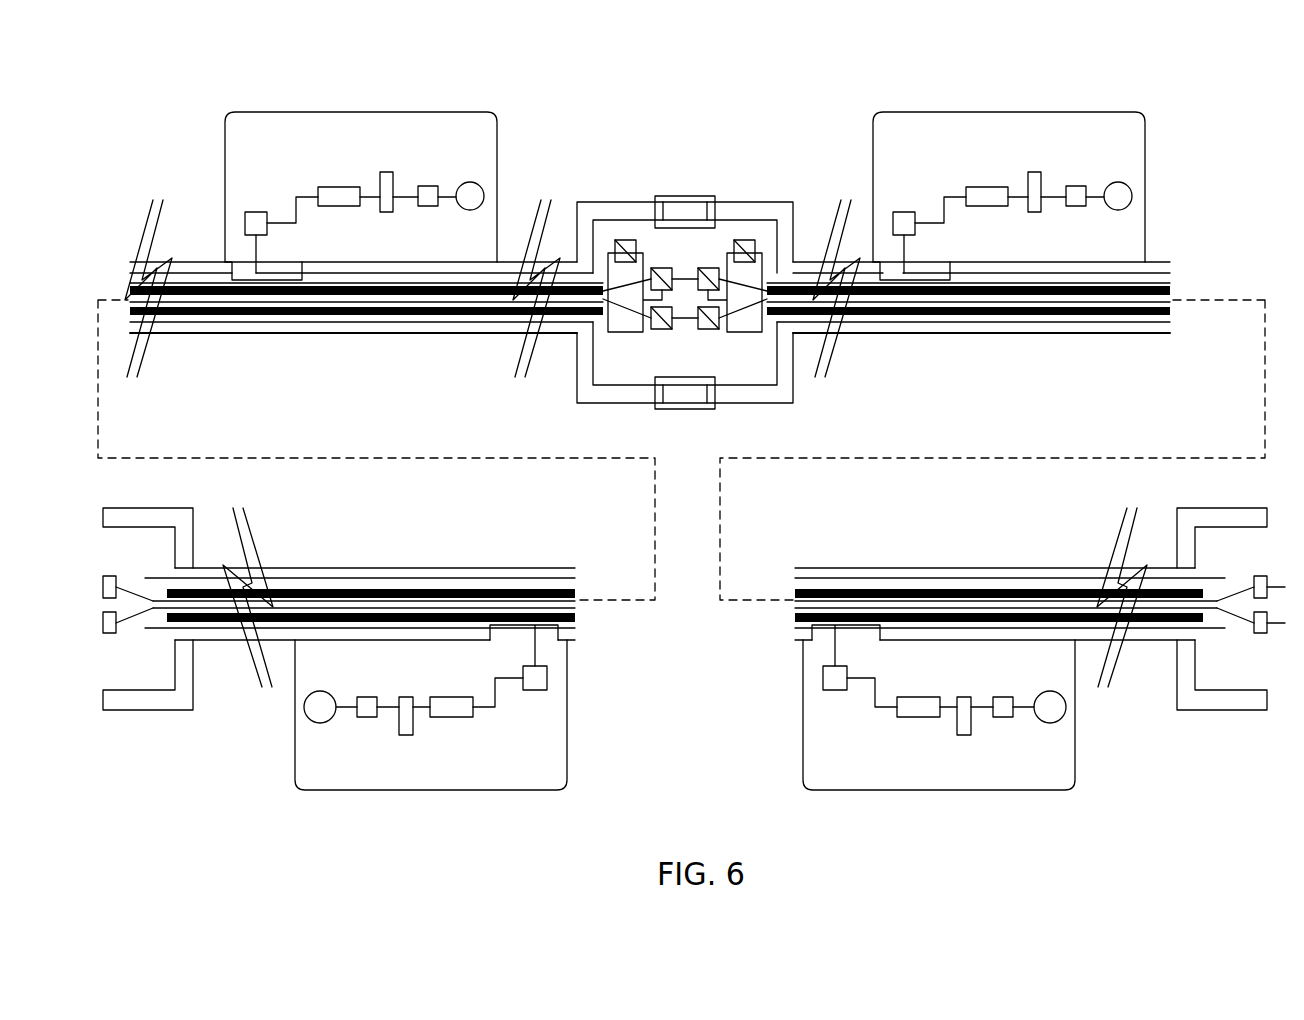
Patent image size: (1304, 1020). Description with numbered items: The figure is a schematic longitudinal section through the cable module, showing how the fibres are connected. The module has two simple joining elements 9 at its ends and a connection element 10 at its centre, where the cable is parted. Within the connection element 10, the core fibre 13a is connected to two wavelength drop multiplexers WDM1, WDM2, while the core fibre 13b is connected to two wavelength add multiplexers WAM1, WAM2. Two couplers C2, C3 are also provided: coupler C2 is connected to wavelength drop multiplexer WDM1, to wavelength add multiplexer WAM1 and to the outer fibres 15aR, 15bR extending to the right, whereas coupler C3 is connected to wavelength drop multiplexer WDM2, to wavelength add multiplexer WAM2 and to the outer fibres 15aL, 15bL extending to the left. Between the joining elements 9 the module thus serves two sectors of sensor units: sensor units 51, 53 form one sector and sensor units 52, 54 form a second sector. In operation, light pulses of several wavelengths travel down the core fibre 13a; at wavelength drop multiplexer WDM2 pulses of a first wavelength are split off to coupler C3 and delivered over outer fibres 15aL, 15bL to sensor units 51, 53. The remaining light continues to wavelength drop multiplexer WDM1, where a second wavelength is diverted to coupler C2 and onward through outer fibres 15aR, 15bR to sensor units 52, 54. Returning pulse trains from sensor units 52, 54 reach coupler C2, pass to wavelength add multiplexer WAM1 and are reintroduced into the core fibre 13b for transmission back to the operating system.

The connection element 10 is at (729, 203).
The sensor unit 51 is at (422, 112).
The sensor unit 52 is at (1026, 112).
The sensor unit 53 is at (568, 733).
The sensor unit 54 is at (1083, 713).
The outer fibre 15aL is at (472, 273).
The outer fibre 15bL is at (365, 322).
The outer fibre 15aR is at (805, 262).
The outer fibre 15bR is at (858, 322).
The wavelength drop multiplexer WDM1 is at (706, 268).
The wavelength drop multiplexer WDM2 is at (665, 268).
The wavelength add multiplexer WAM1 is at (704, 329).
The wavelength add multiplexer WAM2 is at (660, 329).
The coupler C2 is at (750, 240).
The coupler C3 is at (628, 240).
The core fibre 13a is at (103, 587).
The core fibre 13b is at (103, 623).
The joining element 9 is at (180, 710).